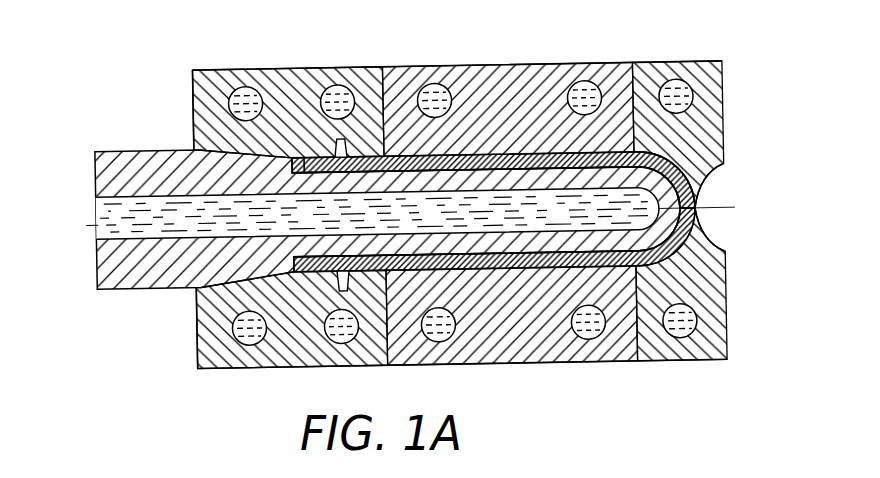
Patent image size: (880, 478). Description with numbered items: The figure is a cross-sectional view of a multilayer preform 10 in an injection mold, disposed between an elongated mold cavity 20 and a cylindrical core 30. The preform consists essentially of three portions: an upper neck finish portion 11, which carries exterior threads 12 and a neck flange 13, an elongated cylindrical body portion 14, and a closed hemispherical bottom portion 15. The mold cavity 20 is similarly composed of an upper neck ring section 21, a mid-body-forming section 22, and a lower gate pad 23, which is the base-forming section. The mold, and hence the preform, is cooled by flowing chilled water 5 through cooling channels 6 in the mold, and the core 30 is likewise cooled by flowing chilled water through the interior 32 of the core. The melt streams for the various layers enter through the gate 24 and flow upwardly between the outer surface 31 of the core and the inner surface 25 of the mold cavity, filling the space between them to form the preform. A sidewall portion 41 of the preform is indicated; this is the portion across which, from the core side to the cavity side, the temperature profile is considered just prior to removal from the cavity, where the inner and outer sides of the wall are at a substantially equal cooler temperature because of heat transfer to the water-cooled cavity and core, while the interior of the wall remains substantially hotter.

The chilled water 5 is at (245, 100).
The cooling channels 6 is at (193, 97).
The multilayer preform 10 is at (692, 257).
The upper neck finish portion 11 is at (317, 148).
The exterior threads 12 is at (309, 148).
The neck flange 13 is at (345, 137).
The elongated cylindrical body portion 14 is at (497, 153).
The closed hemispherical bottom portion 15 is at (677, 180).
The elongated mold cavity 20 is at (485, 60).
The upper neck ring section 21 is at (250, 68).
The mid-body-forming section 22 is at (553, 63).
The lower gate pad 23 is at (662, 60).
The gate 24 is at (697, 202).
The inner surface of the mold cavity 25 is at (560, 272).
The cylindrical core 30 is at (110, 146).
The outer surface of the core 31 is at (561, 244).
The interior of the core 32 is at (106, 231).
The sidewall portion 41 is at (513, 275).